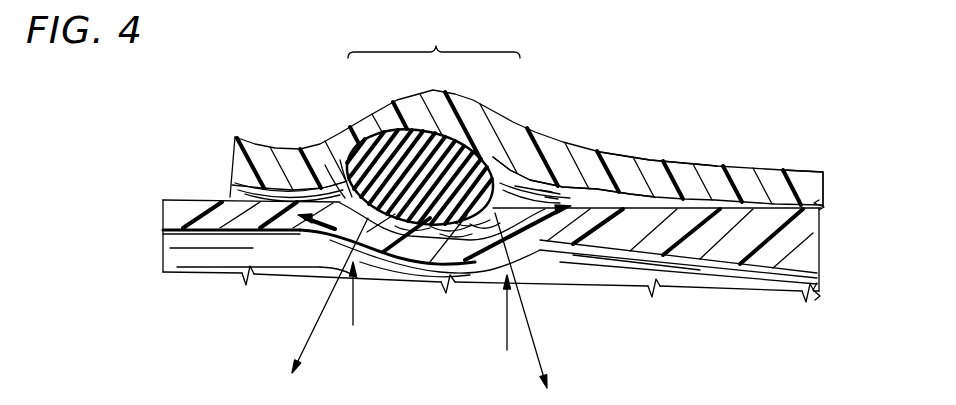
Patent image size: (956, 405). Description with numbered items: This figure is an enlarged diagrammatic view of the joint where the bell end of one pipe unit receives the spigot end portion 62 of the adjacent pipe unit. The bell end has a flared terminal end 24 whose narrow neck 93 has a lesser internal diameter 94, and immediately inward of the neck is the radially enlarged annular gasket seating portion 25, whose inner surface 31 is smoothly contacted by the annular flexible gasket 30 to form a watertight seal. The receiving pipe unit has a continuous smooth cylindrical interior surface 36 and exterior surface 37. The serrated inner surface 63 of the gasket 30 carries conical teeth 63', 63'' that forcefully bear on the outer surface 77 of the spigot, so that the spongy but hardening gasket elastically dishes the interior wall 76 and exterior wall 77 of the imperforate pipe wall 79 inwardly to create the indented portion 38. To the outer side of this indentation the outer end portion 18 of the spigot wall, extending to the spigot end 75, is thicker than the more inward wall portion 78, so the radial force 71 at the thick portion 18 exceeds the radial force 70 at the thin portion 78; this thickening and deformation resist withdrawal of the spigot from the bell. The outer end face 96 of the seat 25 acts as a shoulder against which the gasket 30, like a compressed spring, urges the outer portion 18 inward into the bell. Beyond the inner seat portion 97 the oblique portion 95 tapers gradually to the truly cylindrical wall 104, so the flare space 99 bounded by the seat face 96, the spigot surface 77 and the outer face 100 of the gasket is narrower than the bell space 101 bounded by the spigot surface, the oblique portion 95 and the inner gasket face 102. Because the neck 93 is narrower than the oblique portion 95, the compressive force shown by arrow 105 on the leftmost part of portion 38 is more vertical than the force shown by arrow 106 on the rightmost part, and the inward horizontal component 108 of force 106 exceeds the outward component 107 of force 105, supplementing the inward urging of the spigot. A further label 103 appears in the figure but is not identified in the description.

The outer end portion of spigot wall 18 is at (507, 230).
The flared terminal end 24 is at (224, 155).
The annular gasket seating portion 25 is at (434, 41).
The annular flexible gasket 30 is at (487, 118).
The inner surface of gasket seating portion 31 is at (449, 93).
The interior surface 36 is at (238, 188).
The exterior surface 37 is at (800, 170).
The indented portion 38 is at (441, 232).
The spigot end portion 62 is at (168, 277).
The inner surface of gasket 63 is at (440, 282).
The conical tooth 63' is at (405, 280).
The conical tooth 63'' is at (469, 277).
The radial force at thin spigot wall portion 70 is at (351, 303).
The radial force at thick spigot wall portion 71 is at (505, 322).
The spigot end 75 is at (803, 262).
The interior wall 76 is at (160, 244).
The exterior wall 77 is at (182, 200).
The inward wall portion 78 is at (380, 240).
The imperforate pipe unit wall 79 is at (152, 211).
The neck 93 is at (305, 152).
The internal diameter of neck 94 is at (247, 198).
The oblique portion 95 is at (558, 183).
The outer end face of seat 96 is at (364, 122).
The inner seat portion 97 is at (481, 106).
The flare space 99 is at (322, 185).
The outer face of gasket 100 is at (345, 170).
The bell space 101 is at (524, 190).
The inner face of gasket 102 is at (494, 157).
The skin upper surface 103 is at (627, 158).
The truly cylindrical wall 104 is at (772, 162).
The compressive force arrow 105 is at (323, 292).
The compressive force arrow 106 is at (543, 352).
The outward horizontal force component 107 is at (320, 235).
The inward horizontal force component 108 is at (548, 215).